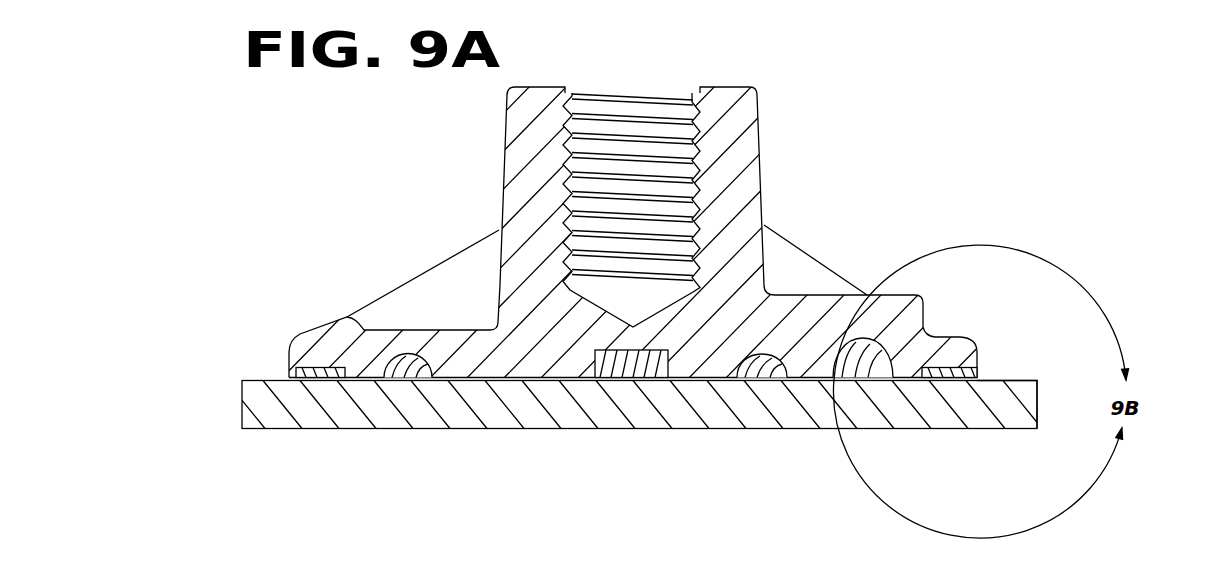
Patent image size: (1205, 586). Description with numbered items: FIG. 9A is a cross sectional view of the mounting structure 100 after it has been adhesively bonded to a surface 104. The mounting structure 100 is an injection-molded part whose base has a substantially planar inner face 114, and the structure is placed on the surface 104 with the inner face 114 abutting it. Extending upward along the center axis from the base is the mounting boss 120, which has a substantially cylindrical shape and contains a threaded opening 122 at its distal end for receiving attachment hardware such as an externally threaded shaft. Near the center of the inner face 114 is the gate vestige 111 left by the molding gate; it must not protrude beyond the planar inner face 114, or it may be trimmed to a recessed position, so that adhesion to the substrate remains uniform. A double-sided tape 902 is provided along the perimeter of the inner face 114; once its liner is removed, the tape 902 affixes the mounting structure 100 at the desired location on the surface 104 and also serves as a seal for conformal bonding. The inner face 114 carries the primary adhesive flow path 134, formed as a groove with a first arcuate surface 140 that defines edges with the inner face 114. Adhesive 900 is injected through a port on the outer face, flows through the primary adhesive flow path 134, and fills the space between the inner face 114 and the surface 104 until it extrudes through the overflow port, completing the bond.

The mounting structure 100 is at (773, 72).
The surface 104 is at (1005, 379).
The gate vestige 111 is at (648, 370).
The inner face 114 is at (528, 383).
The mounting boss 120 is at (506, 150).
The threaded opening 122 is at (630, 102).
The primary adhesive flow path 134 is at (827, 392).
The first arcuate surface 140 is at (870, 372).
The adhesive 900 is at (412, 372).
The double-sided tape 902 is at (333, 380).